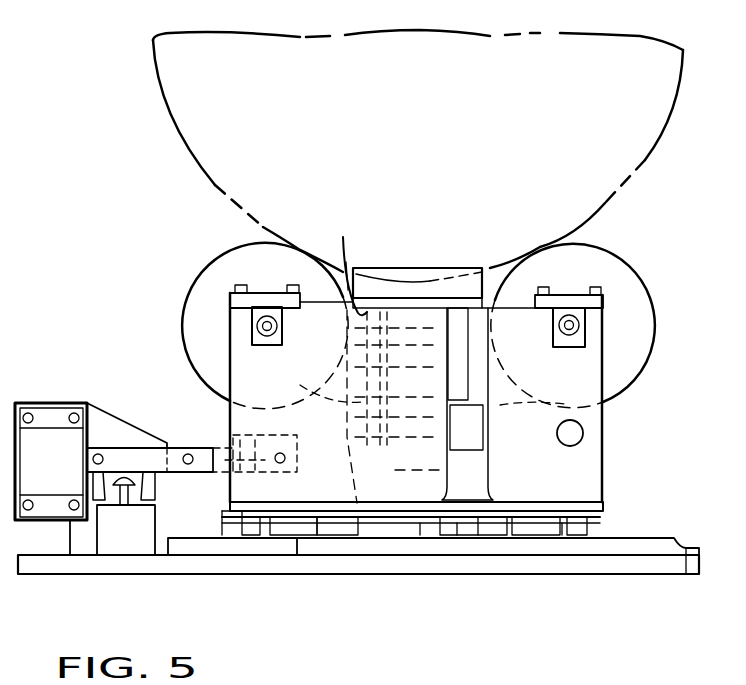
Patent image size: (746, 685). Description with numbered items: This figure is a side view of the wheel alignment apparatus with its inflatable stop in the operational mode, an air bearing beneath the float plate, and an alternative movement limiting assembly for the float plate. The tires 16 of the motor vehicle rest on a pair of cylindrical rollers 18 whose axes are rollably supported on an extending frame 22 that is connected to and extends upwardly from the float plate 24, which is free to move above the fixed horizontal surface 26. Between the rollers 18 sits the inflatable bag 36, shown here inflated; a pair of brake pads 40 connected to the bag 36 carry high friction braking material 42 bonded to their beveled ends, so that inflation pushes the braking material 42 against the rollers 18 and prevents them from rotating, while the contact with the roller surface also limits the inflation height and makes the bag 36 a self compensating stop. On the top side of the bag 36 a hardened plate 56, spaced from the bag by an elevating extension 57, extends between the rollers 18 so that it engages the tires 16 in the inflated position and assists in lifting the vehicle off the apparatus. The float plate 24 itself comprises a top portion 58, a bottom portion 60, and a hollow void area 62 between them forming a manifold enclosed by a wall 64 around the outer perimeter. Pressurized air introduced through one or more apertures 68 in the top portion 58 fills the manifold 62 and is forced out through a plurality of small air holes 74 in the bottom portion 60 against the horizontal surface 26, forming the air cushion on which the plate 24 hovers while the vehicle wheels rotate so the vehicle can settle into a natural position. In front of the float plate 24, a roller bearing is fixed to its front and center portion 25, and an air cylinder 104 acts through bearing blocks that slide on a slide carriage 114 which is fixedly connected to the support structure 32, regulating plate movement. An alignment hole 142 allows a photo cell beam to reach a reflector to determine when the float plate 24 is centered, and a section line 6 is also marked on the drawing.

The tires 16 is at (163, 103).
The cylindrical rollers 18 is at (222, 262).
The extending frame 22 is at (603, 448).
The float plate 24 is at (603, 508).
The front and center portion 25 is at (220, 538).
The horizontal surface 26 is at (684, 558).
The support structure 32 is at (152, 570).
The inflatable bag 36 is at (347, 466).
The brake pads 40 is at (318, 400).
The high friction braking material 42 is at (333, 374).
The hardened plate 56 is at (408, 268).
The elevating extension 57 is at (347, 280).
The top portion 58 is at (510, 505).
The bottom portion 60 is at (423, 518).
The hollow void area 62 is at (458, 518).
The wall 64 is at (563, 520).
The apertures 68 is at (548, 503).
The small air holes 74 is at (318, 527).
The air cylinder 104 is at (48, 403).
The slide carriage 114 is at (122, 507).
The alignment hole 142 is at (583, 431).
The section line 6 is at (192, 547).